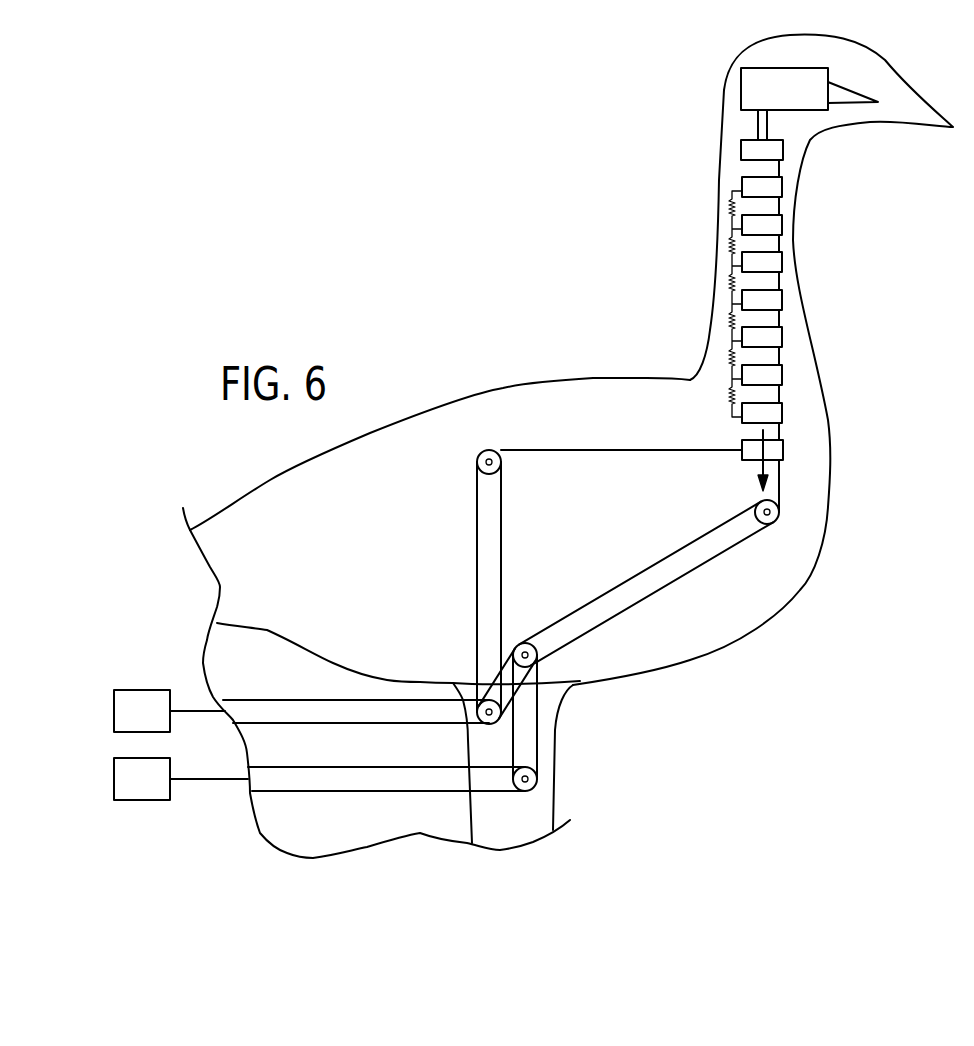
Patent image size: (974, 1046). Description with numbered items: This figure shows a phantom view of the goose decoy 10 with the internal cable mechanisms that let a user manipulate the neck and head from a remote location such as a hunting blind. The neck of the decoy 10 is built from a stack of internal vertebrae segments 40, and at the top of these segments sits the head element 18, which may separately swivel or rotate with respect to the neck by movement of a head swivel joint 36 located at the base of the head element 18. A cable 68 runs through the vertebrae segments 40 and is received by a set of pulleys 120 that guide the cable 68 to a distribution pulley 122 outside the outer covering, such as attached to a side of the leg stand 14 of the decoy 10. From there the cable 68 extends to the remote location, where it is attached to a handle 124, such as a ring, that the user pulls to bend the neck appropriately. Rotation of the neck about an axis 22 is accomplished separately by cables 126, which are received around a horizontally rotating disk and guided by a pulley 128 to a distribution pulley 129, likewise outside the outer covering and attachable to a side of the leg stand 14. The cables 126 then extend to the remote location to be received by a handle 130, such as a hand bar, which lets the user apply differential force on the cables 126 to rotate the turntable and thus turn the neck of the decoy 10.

The decoy 10 is at (571, 166).
The leg stand 14 is at (537, 810).
The head element 18 is at (758, 70).
The axis 22 is at (760, 470).
The head swivel joint 36 is at (741, 146).
The vertebrae segments 40 is at (783, 187).
The cable 68 is at (724, 550).
The pulleys 120 is at (776, 520).
The distribution pulley 122 is at (532, 786).
The handle 124 is at (145, 800).
The cables 126 is at (563, 450).
The pulley 128 is at (485, 472).
The distribution pulley 129 is at (488, 699).
The handle 130 is at (783, 444).